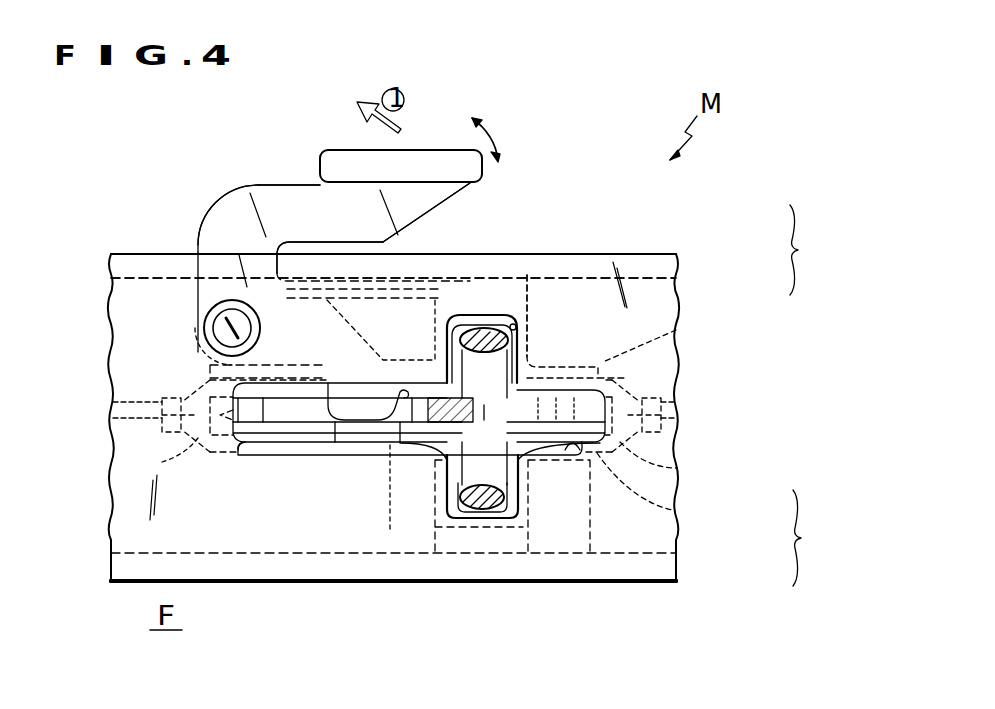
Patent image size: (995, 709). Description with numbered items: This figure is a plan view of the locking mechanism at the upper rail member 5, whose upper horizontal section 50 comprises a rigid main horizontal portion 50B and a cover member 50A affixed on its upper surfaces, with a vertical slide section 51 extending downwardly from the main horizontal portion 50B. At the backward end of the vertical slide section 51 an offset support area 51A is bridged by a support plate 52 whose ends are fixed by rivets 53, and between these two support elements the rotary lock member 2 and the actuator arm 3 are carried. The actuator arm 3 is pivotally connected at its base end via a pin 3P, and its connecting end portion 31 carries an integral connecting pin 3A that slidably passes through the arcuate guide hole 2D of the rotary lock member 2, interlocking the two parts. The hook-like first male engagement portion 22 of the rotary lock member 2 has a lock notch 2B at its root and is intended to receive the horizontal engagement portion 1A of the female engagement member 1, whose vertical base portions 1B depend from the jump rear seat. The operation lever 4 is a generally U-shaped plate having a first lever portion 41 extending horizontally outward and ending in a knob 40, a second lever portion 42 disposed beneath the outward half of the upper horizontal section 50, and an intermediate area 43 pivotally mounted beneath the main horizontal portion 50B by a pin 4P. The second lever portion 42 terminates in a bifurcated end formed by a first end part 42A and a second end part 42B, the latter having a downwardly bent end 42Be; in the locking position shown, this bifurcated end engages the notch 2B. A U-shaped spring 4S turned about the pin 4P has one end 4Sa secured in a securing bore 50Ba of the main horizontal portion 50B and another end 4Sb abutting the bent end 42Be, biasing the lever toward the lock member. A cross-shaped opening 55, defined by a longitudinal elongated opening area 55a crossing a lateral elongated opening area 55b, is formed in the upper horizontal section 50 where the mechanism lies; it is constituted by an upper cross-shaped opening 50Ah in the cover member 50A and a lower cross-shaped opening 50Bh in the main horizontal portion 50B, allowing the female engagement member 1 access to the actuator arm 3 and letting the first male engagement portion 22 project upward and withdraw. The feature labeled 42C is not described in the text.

The female engagement member 1 is at (473, 517).
The horizontal engagement portion 1A is at (500, 497).
The vertical base portions 1B is at (478, 330).
The rotary lock member 2 is at (440, 450).
The lock notch 2B is at (395, 432).
The arcuate guide hole 2D is at (540, 364).
The first male engagement portion 22 is at (492, 404).
The actuator arm 3 is at (273, 445).
The connecting pin 3A is at (567, 463).
The pin 3P is at (227, 444).
The connecting end portion 31 is at (540, 445).
The operation lever 4 is at (235, 193).
The pin 4P is at (230, 328).
The U-shaped spring 4S is at (380, 280).
The end of spring 4Sa is at (473, 300).
The another end of spring 4Sb is at (380, 362).
The knob 40 is at (443, 160).
The first lever portion 41 is at (275, 188).
The second lever portion 42 is at (319, 265).
The first end part 42A is at (340, 443).
The second end part 42B is at (405, 442).
The downwardly bent end 42Be is at (412, 500).
The lever body projection 42C is at (377, 400).
The intermediate area 43 is at (201, 235).
The upper rail member 5 is at (690, 360).
The upper horizontal section 50 is at (815, 250).
The cover member 50A is at (648, 254).
The main horizontal portion 50B is at (643, 322).
The securing bore 50Ba is at (533, 297).
The lower cross-shaped opening 50Bh is at (672, 510).
The upper cross-shaped opening 50Ah is at (582, 447).
The vertical slide section 51 is at (160, 402).
The offset support area 51A is at (676, 330).
The support plate 52 is at (162, 462).
The rivets 53 is at (175, 396).
The opening 55 is at (819, 538).
The longitudinal elongated opening area 55a is at (275, 447).
The lateral elongated opening area 55b is at (520, 318).